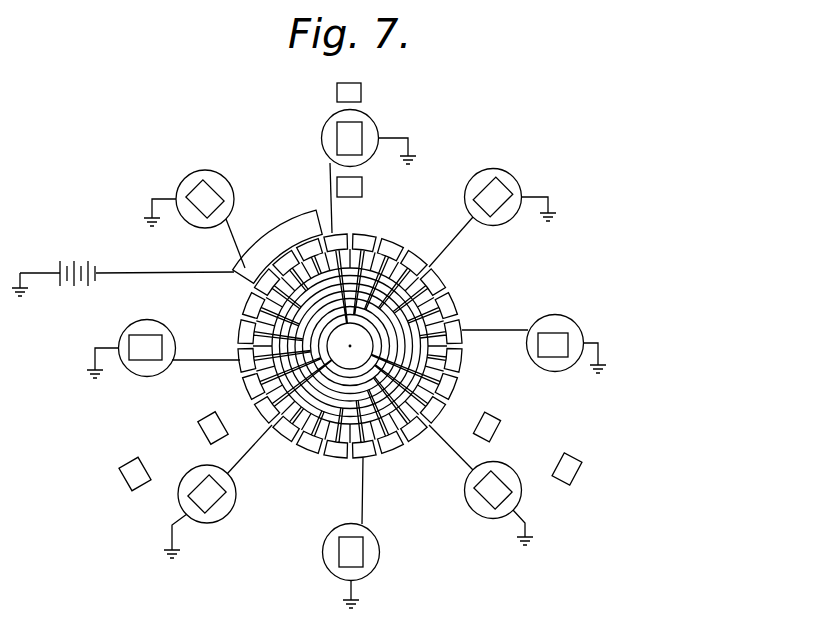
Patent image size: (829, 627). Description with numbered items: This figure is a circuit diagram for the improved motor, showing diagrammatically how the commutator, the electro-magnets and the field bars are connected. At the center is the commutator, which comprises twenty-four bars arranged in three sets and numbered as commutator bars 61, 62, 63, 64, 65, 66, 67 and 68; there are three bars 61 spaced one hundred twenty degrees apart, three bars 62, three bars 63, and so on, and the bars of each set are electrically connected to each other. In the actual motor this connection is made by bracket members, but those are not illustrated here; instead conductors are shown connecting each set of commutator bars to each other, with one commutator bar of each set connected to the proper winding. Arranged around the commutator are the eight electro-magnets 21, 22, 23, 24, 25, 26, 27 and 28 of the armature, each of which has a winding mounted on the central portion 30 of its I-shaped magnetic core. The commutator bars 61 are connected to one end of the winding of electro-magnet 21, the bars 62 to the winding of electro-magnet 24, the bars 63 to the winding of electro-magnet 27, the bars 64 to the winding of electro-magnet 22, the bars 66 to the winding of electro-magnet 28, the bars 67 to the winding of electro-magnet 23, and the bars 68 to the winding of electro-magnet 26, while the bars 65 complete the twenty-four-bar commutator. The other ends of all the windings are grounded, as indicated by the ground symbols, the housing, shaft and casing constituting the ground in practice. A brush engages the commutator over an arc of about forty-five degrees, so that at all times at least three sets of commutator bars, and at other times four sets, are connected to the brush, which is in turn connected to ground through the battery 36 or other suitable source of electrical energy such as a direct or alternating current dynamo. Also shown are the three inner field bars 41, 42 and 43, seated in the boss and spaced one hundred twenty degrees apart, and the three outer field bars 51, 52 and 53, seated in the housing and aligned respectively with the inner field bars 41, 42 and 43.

The electro-magnet 21 is at (370, 118).
The electro-magnet 22 is at (220, 178).
The electro-magnet 23 is at (148, 323).
The electro-magnet 24 is at (192, 476).
The electro-magnet 25 is at (374, 563).
The electro-magnet 26 is at (506, 471).
The electro-magnet 27 is at (562, 366).
The electro-magnet 28 is at (507, 218).
The central portion 30 is at (298, 221).
The battery 36 is at (77, 260).
The inner field bar 41 is at (365, 190).
The inner field bar 42 is at (214, 420).
The inner field bar 43 is at (490, 418).
The outer field bar 51 is at (348, 88).
The outer field bar 52 is at (133, 463).
The outer field bar 53 is at (573, 461).
The commutator bar 61 is at (338, 236).
The commutator bar 62 is at (459, 360).
The commutator bar 63 is at (459, 326).
The commutator bar 64 is at (449, 305).
The commutator bar 65 is at (433, 283).
The commutator bar 66 is at (409, 255).
The commutator bar 67 is at (390, 245).
The commutator bar 68 is at (366, 238).